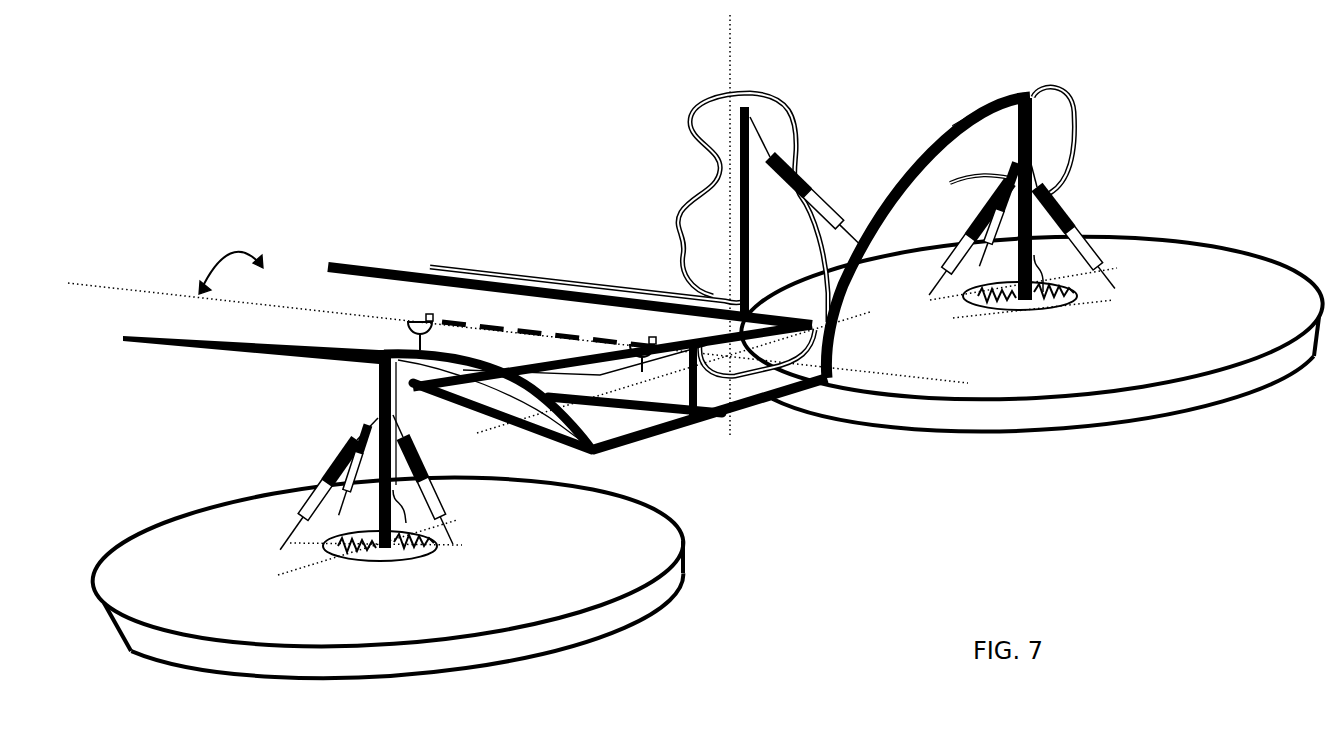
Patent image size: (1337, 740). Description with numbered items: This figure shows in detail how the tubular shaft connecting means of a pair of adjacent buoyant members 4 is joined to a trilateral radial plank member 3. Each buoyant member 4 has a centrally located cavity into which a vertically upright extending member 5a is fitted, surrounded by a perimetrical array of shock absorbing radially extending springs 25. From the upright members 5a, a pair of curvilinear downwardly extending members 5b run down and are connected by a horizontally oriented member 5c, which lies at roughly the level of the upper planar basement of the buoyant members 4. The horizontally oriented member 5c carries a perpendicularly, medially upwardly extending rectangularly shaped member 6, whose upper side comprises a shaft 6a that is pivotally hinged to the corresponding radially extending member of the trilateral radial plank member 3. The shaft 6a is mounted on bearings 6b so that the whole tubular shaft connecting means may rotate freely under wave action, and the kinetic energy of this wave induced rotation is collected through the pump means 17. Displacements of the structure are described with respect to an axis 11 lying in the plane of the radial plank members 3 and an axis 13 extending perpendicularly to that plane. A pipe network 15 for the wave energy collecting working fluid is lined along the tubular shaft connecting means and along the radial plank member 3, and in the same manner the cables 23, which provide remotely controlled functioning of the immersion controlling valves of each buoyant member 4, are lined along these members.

The trilateral radial plank member 3 is at (370, 272).
The buoyant member 4 is at (440, 613).
The vertically upright extending member 5a is at (378, 383).
The curvilinear downwardly extending member 5b is at (940, 147).
The horizontally oriented member 5c is at (750, 400).
The rectangularly shaped member 6 is at (707, 402).
The shaft 6a is at (553, 330).
The bearings 6b is at (430, 312).
The axis 11 is at (133, 276).
The axis 13 is at (706, 61).
The pipe network 15 is at (680, 212).
The pump means 17 is at (800, 182).
The cables 23 is at (408, 405).
The shock absorbing radially extending springs 25 is at (363, 552).